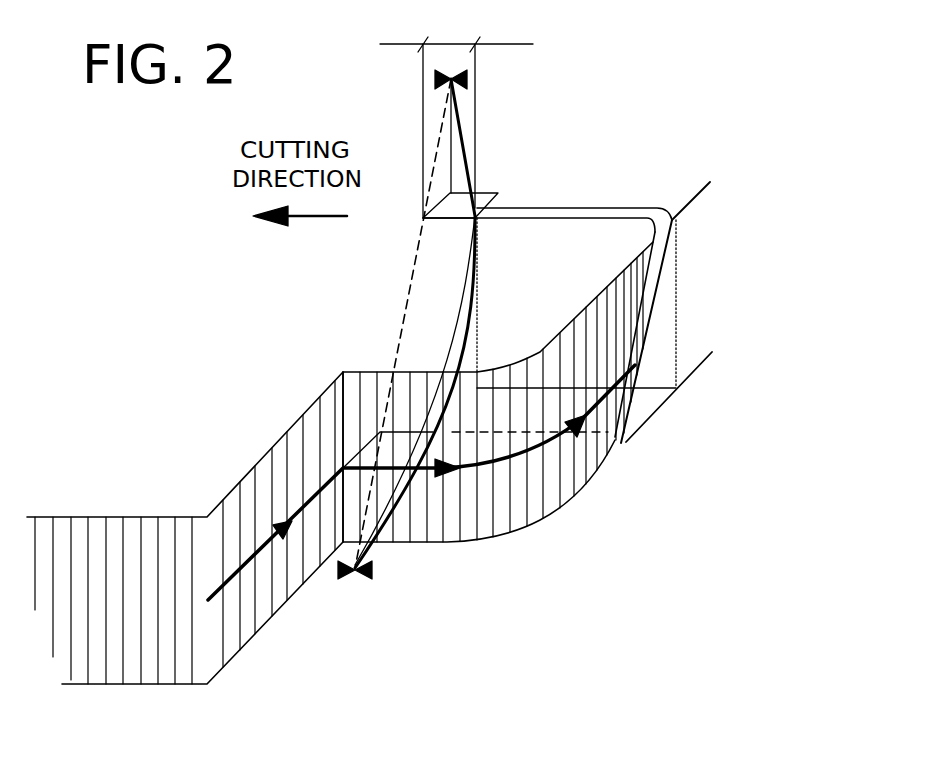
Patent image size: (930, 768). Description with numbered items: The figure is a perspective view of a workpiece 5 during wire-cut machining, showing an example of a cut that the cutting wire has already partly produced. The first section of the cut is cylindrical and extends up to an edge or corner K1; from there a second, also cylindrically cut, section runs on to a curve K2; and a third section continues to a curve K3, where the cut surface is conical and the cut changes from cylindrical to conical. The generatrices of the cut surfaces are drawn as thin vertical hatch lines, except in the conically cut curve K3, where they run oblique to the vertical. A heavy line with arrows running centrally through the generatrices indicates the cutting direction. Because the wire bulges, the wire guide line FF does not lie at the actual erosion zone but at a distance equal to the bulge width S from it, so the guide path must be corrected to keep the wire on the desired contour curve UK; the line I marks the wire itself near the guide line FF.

The workpiece 5 is at (159, 464).
The edge or corner K1 is at (344, 369).
The curve K2 is at (523, 353).
The curve with conical cut surface K3 is at (667, 259).
The width of the bulge S is at (456, 33).
The wire guide line FF is at (438, 128).
The cutting edge line I is at (463, 157).
The contour curve UK is at (533, 528).